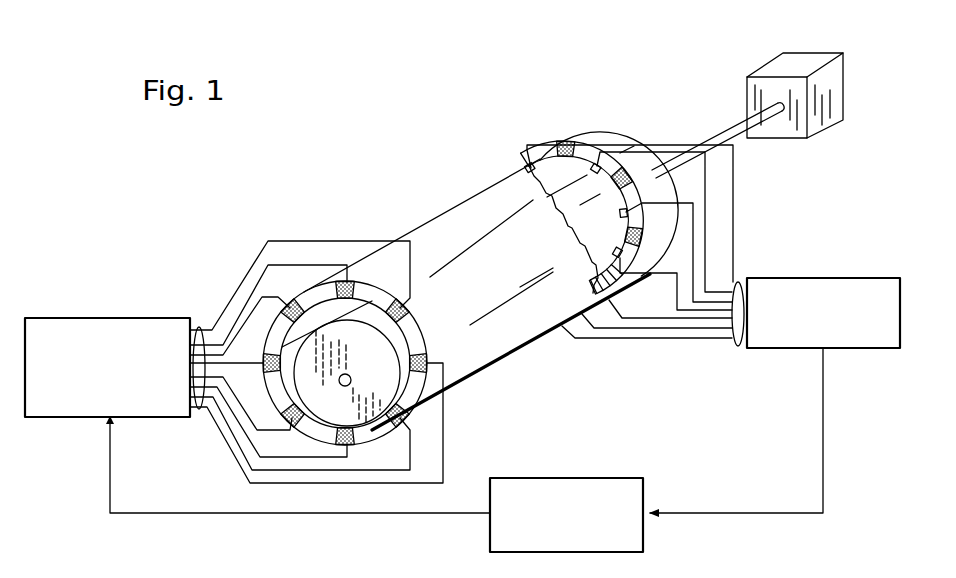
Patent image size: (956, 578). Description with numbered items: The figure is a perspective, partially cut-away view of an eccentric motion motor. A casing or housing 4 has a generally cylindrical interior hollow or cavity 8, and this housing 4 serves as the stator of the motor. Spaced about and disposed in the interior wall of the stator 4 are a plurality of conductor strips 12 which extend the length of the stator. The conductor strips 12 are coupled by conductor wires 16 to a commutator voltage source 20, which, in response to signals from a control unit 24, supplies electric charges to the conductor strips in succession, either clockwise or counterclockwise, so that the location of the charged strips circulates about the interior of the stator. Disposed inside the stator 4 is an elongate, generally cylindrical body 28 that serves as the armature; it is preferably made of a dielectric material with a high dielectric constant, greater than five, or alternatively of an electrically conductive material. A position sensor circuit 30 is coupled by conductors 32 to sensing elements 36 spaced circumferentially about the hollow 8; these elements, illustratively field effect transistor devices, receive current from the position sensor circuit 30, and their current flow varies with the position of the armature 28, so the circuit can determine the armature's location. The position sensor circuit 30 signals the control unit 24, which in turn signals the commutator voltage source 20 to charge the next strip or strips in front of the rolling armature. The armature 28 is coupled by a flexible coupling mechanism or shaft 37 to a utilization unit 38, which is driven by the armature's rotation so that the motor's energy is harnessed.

The housing 4 is at (472, 203).
The cavity 8 is at (337, 310).
The conductor strips 12 is at (266, 375).
The conductor wires 16 is at (200, 328).
The commutator voltage source 20 is at (107, 318).
The control unit 24 is at (588, 478).
The armature 28 is at (316, 360).
The position sensor circuit 30 is at (833, 278).
The conductors 32 is at (737, 347).
The sensing elements 36 is at (626, 211).
The flexible coupling mechanism 37 is at (714, 136).
The utilization unit 38 is at (807, 53).